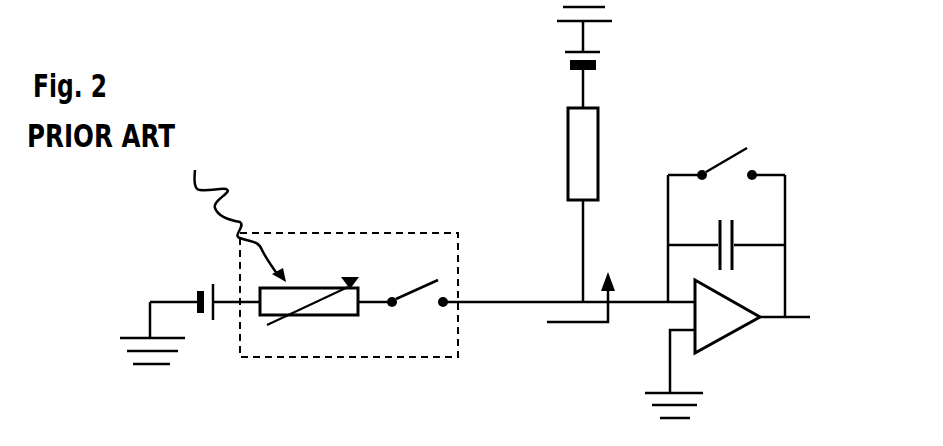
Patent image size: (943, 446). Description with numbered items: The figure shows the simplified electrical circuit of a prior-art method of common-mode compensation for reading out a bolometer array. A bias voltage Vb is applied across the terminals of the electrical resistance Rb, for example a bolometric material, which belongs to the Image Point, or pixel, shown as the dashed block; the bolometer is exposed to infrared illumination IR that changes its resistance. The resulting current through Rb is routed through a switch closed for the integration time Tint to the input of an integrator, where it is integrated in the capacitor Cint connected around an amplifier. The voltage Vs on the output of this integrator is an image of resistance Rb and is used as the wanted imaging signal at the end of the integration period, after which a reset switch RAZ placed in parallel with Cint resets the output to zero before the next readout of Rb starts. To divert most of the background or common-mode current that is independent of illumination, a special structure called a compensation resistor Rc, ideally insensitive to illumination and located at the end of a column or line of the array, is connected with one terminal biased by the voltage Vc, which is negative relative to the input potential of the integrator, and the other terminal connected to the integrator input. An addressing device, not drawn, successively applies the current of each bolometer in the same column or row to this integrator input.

The bias voltage Vb is at (207, 285).
The electrical resistance Rb is at (309, 288).
The infrared illumination IR is at (240, 226).
The integration time Tint is at (417, 276).
The image point Image Point is at (349, 295).
The compensation bias voltage Vc is at (566, 57).
The compensation resistor Rc is at (559, 205).
The reset switch RAZ is at (727, 148).
The integration capacitor Cint is at (726, 231).
The output voltage Vs is at (812, 319).